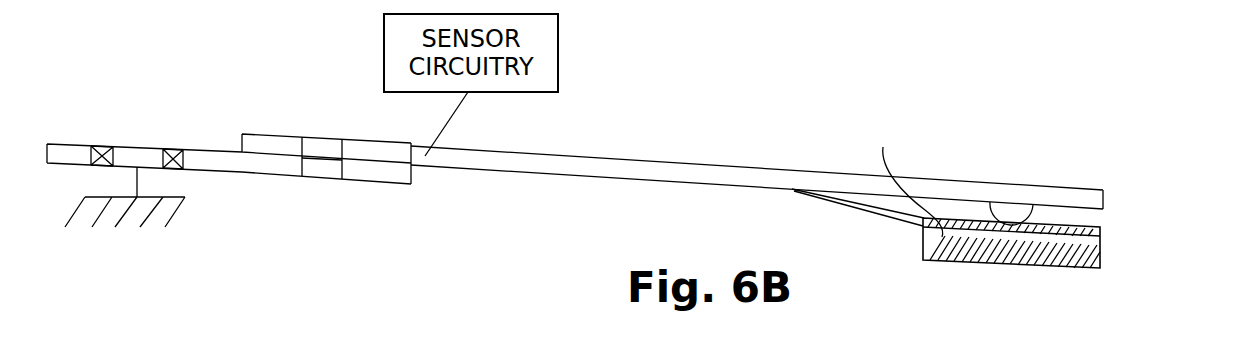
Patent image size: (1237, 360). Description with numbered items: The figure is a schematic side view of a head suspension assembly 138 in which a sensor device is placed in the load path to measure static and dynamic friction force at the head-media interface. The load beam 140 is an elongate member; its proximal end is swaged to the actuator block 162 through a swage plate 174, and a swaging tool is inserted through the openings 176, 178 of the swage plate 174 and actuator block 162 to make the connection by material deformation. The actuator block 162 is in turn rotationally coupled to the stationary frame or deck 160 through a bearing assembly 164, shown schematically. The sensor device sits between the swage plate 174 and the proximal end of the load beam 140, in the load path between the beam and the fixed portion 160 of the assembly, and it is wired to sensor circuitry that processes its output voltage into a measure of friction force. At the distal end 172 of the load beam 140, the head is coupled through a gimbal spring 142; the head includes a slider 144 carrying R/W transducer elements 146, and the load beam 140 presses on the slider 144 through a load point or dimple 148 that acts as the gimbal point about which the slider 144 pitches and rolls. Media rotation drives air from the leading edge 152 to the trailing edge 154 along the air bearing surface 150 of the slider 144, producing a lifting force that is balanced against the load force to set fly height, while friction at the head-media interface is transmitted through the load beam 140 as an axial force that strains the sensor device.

The head suspension assembly 138 is at (486, 151).
The load beam 140 is at (571, 157).
The gimbal spring 142 is at (1103, 223).
The slider 144 is at (1000, 250).
The R/W transducer elements 146 is at (1101, 262).
The load point or dimple 148 is at (1012, 214).
The air bearing surface 150 is at (1020, 268).
The leading edge 152 is at (923, 237).
The trailing edge 154 is at (1101, 243).
The frame or deck 160 is at (173, 213).
The actuator block 162 is at (58, 147).
The bearing assembly 164 is at (100, 145).
The distal end 172 is at (1098, 190).
The swage plate 174 is at (262, 142).
The opening 176 is at (330, 147).
The opening 178 is at (326, 174).